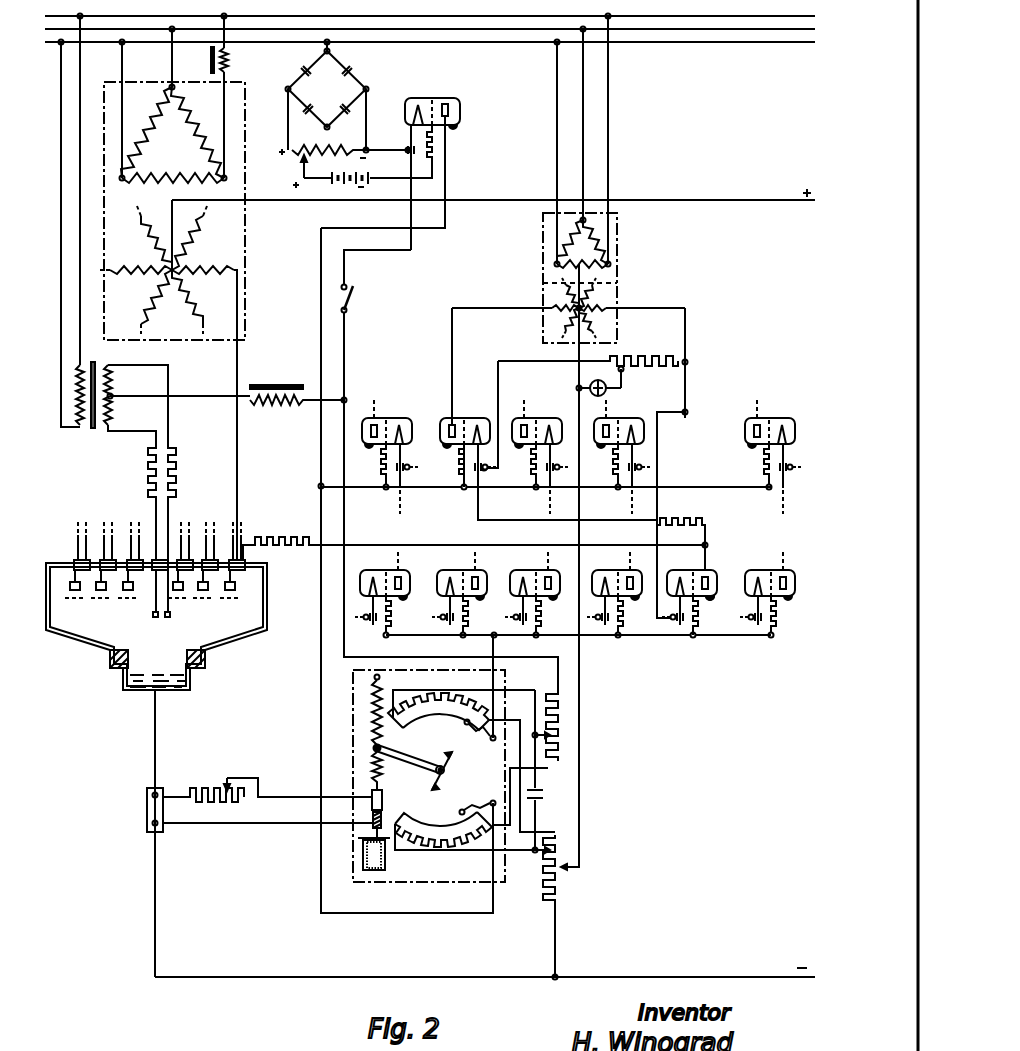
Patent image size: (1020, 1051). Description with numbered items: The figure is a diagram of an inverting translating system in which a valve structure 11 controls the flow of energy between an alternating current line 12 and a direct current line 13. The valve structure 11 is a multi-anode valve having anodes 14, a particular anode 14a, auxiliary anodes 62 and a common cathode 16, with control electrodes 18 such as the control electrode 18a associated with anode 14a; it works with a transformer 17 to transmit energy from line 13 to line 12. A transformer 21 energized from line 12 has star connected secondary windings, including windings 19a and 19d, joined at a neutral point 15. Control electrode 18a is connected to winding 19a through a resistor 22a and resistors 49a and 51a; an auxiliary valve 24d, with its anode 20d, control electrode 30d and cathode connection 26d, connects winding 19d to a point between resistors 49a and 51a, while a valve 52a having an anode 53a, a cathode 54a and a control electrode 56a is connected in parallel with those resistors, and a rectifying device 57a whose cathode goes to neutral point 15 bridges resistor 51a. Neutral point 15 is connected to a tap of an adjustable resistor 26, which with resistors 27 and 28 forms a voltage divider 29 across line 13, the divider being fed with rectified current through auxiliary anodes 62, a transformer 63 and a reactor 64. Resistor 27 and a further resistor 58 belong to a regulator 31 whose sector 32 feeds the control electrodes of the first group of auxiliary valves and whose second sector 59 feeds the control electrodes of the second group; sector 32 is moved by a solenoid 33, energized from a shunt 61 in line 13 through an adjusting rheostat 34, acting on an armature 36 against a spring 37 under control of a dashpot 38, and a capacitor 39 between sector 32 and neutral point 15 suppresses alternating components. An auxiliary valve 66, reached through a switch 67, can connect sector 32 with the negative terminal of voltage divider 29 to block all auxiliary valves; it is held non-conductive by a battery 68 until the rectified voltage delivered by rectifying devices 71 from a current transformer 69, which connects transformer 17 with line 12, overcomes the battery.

The valve structure 11 is at (75, 633).
The line 12 is at (757, 19).
The line 13 is at (705, 200).
The anodes 14 is at (99, 590).
The anode 14a is at (210, 591).
The neutral point 15 is at (580, 292).
The cathode structure 16 is at (137, 692).
The transformer 17 is at (244, 236).
The control electrodes 18 is at (127, 591).
The control electrode 18a is at (236, 592).
The winding 19a is at (610, 307).
The winding 19d is at (548, 306).
The anode 20d is at (449, 418).
The transformer 21 is at (617, 228).
The resistor 22a is at (277, 537).
The auxiliary valve 24d is at (440, 442).
The adjustable resistor 26 is at (565, 888).
The relay contact lead 26d is at (488, 408).
The resistor 27 is at (447, 843).
The resistor 28 is at (556, 693).
The voltage divider 29 is at (376, 658).
The control electrode 30d is at (478, 418).
The regulator 31 is at (418, 884).
The sector 32 is at (447, 805).
The solenoid 33 is at (382, 821).
The adjusting rheostat 34 is at (202, 790).
The armature 36 is at (382, 797).
The spring 37 is at (372, 708).
The dashpot 38 is at (385, 865).
The capacitor 39 is at (542, 798).
The resistor 49a is at (670, 521).
The resistor 51a is at (631, 358).
The valve 52a is at (714, 600).
The anode 53a is at (709, 578).
The cathode 54a is at (678, 578).
The control electrode 56a is at (698, 618).
The rectifying device 57a is at (608, 392).
The resistor 58 is at (420, 699).
The second sector 59 is at (436, 752).
The shunt 61 is at (146, 808).
The auxiliary anodes 62 is at (160, 620).
The transformer 63 is at (93, 430).
The reactor 64 is at (284, 386).
The auxiliary valve 66 is at (461, 102).
The switch 67 is at (353, 292).
The battery 68 is at (370, 177).
The current transformer 69 is at (210, 62).
The rectifying devices 71 is at (327, 86).